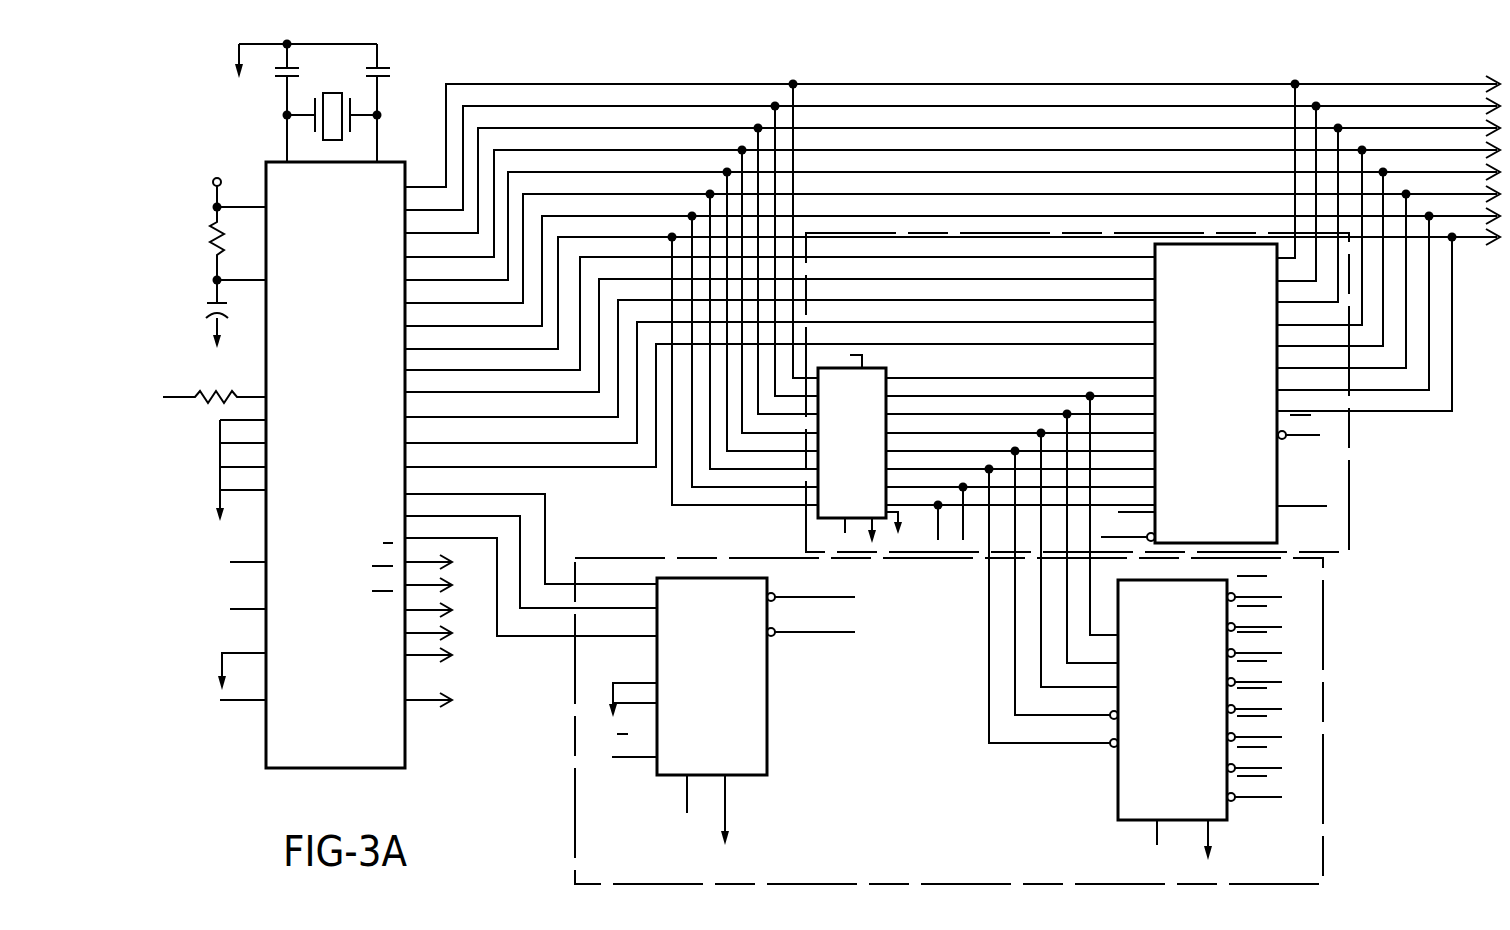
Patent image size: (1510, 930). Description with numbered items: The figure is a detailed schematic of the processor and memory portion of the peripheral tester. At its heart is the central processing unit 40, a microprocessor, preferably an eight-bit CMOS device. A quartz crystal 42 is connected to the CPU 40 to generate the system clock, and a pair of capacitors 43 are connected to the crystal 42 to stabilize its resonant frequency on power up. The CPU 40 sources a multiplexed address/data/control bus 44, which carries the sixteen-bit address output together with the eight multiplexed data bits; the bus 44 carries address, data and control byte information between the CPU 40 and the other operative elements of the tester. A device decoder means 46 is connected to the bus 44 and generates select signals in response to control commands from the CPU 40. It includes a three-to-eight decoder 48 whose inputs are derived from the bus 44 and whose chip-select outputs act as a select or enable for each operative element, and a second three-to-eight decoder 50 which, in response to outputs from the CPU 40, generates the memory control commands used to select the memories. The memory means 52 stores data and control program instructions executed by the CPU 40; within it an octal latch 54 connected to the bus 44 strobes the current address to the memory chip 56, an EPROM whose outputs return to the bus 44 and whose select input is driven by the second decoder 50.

The central processing unit 40 is at (340, 385).
The quartz crystal 42 is at (357, 92).
The capacitors 43 is at (280, 77).
The bus 44 is at (892, 115).
The device decoder means 46 is at (603, 835).
The 3:8 decoder 48 is at (1135, 798).
The second 3:8 decoder 50 is at (745, 748).
The memory means 52 is at (792, 516).
The octal latch 54 is at (833, 478).
The memory chip 56 is at (1212, 255).